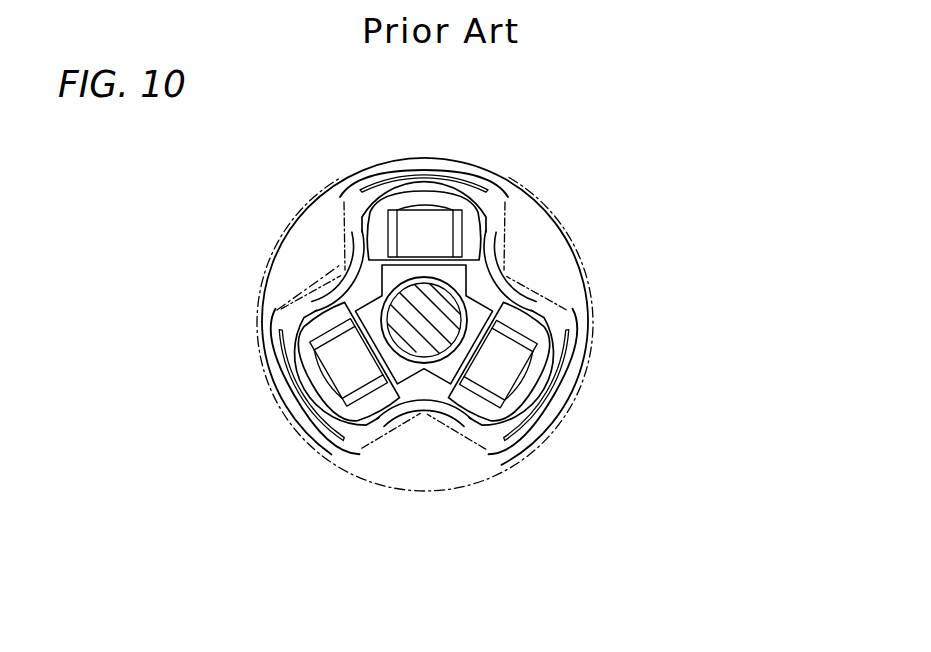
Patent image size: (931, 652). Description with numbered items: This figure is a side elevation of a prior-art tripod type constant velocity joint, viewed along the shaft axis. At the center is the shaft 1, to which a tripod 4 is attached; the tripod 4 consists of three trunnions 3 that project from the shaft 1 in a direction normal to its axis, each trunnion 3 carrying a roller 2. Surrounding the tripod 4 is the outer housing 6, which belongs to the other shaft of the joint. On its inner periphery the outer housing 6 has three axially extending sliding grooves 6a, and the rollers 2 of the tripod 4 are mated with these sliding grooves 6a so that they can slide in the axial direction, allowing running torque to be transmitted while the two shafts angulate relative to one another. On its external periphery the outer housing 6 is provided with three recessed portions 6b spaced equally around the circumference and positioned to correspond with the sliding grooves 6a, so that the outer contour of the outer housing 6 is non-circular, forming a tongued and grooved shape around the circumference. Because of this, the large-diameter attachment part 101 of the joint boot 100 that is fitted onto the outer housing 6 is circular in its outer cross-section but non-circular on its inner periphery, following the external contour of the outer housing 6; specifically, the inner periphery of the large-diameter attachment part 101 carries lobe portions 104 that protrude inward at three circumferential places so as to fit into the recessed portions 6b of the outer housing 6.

The shaft 1 is at (430, 338).
The roller 2 is at (384, 228).
The trunnion 3 is at (433, 226).
The tripod 4 is at (365, 290).
The outer housing 6 is at (290, 352).
The sliding groove 6a is at (470, 190).
The recessed portion 6b is at (338, 228).
The joint boot 100 is at (593, 318).
The large-diameter attachment part 101 is at (565, 250).
The lobe portion 104 is at (312, 284).